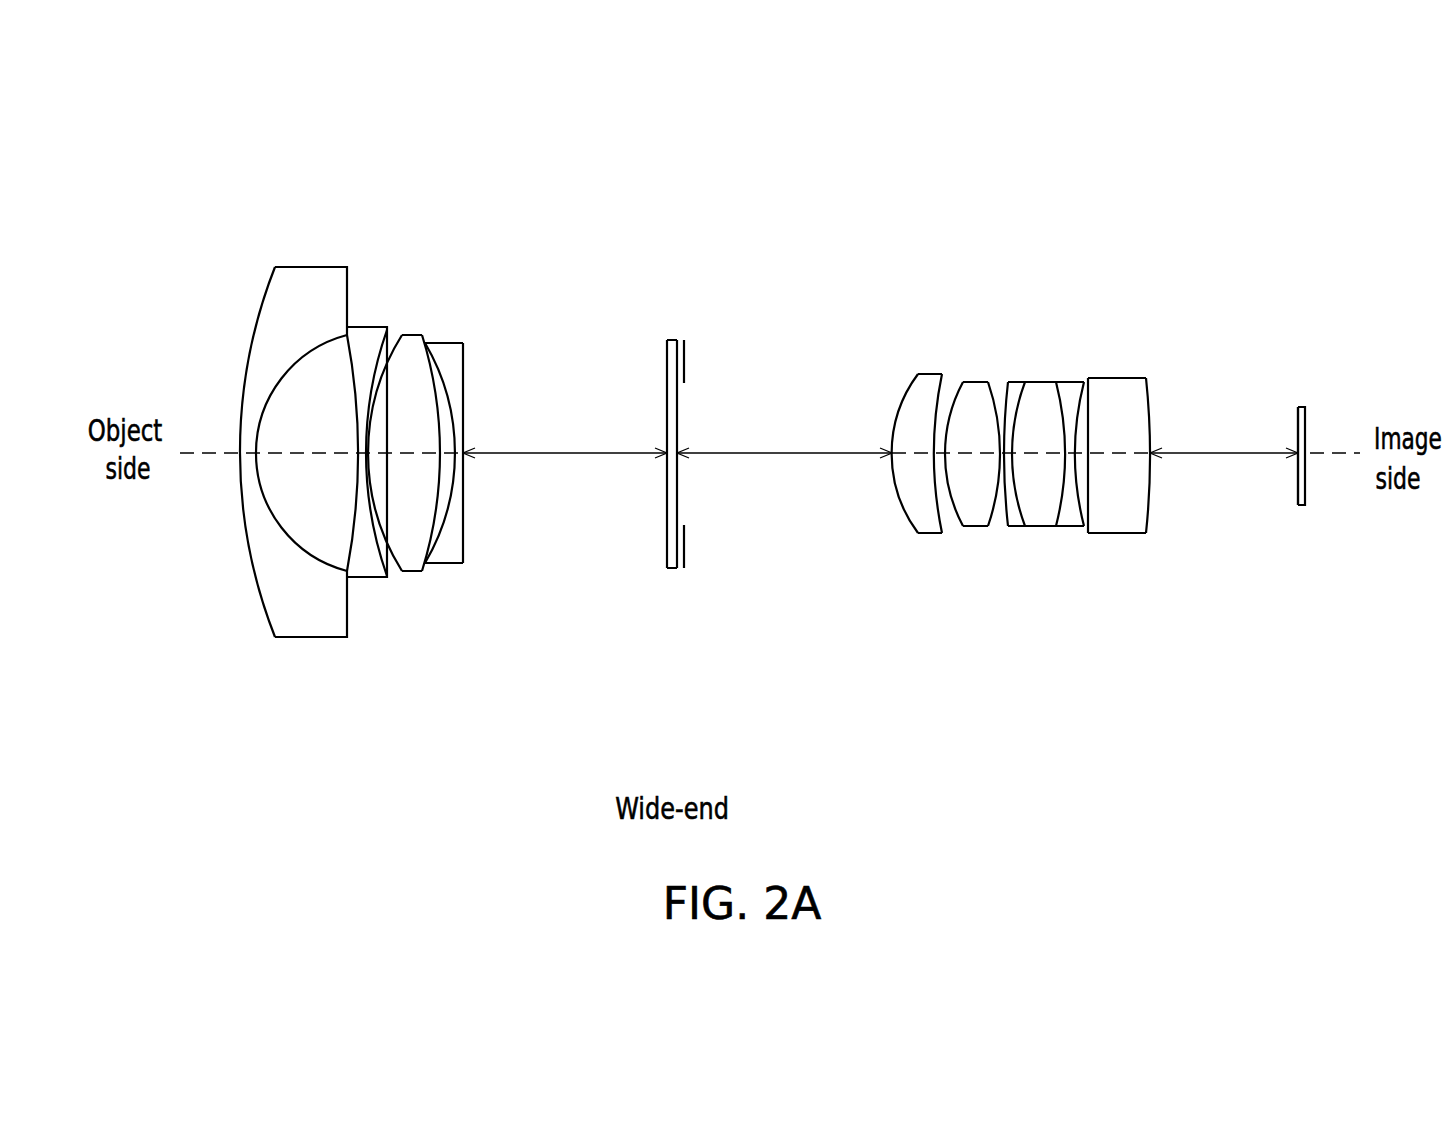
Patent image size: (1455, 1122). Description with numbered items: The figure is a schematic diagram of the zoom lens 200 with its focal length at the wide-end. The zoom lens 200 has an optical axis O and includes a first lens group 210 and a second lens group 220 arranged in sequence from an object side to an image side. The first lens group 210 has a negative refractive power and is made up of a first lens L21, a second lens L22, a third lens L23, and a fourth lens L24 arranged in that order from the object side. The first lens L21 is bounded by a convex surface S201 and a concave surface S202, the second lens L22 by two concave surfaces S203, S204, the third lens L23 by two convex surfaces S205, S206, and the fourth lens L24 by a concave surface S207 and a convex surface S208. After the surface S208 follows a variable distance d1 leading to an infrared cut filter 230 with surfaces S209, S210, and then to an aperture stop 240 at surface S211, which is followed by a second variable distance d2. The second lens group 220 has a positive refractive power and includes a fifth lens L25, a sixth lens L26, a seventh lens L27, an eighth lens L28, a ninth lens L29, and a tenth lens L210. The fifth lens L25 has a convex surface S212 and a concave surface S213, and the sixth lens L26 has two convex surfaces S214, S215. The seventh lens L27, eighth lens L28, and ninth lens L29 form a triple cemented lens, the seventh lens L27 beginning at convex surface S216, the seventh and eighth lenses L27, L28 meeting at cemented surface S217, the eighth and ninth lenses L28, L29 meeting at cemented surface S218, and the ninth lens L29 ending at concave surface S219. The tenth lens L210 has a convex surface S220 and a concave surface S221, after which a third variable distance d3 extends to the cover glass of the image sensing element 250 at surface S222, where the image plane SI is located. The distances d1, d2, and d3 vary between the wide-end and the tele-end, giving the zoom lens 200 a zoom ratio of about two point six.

The zoom lens 200 is at (1427, 842).
The optical axis O is at (215, 442).
The first lens group 210 is at (483, 196).
The first lens L21 is at (290, 298).
The second lens L22 is at (370, 343).
The third lens L23 is at (413, 347).
The fourth lens L24 is at (450, 360).
The second lens group 220 is at (1225, 279).
The fifth lens L25 is at (915, 402).
The sixth lens L26 is at (980, 400).
The seventh lens L27 is at (1017, 390).
The eighth lens L28 is at (1037, 395).
The ninth lens L29 is at (1068, 390).
The tenth lens L210 is at (1132, 397).
The infrared cut filter 230 is at (667, 357).
The aperture stop 240 is at (687, 350).
The cover glass image sensing element 250 is at (1305, 422).
The image plane SI is at (1297, 418).
The variable distance d1 is at (565, 436).
The variable distance d2 is at (784, 436).
The variable distance d3 is at (1224, 436).
The object-side surface of first lens S201 is at (256, 578).
The image-side surface of first lens S202 is at (272, 512).
The object-side surface of second lens S203 is at (355, 512).
The image-side surface of second lens S204 is at (375, 530).
The object-side surface of third lens S205 is at (388, 361).
The image-side surface of third lens S206 is at (439, 470).
The object-side surface of fourth lens S207 is at (436, 542).
The image-side surface of fourth lens S208 is at (463, 515).
The object-side surface of infrared cut filter S209 is at (666, 537).
The image-side surface of infrared cut filter S210 is at (678, 553).
The aperture stop surface S211 is at (686, 533).
The object-side surface of fifth lens S212 is at (907, 515).
The image-side surface of fifth lens S213 is at (937, 502).
The object-side surface of sixth lens S214 is at (951, 413).
The image-side surface of sixth lens S215 is at (1000, 467).
The object-side surface of seventh lens S216 is at (1006, 513).
The cemented surface of seventh and eighth lenses S217 is at (1019, 500).
The cemented surface of eighth and ninth lenses S218 is at (1062, 499).
The image-side surface of ninth lens S219 is at (1079, 488).
The object-side surface of tenth lens S220 is at (1087, 408).
The image-side surface of tenth lens S221 is at (1151, 486).
The surface of cover glass S222 is at (1297, 488).